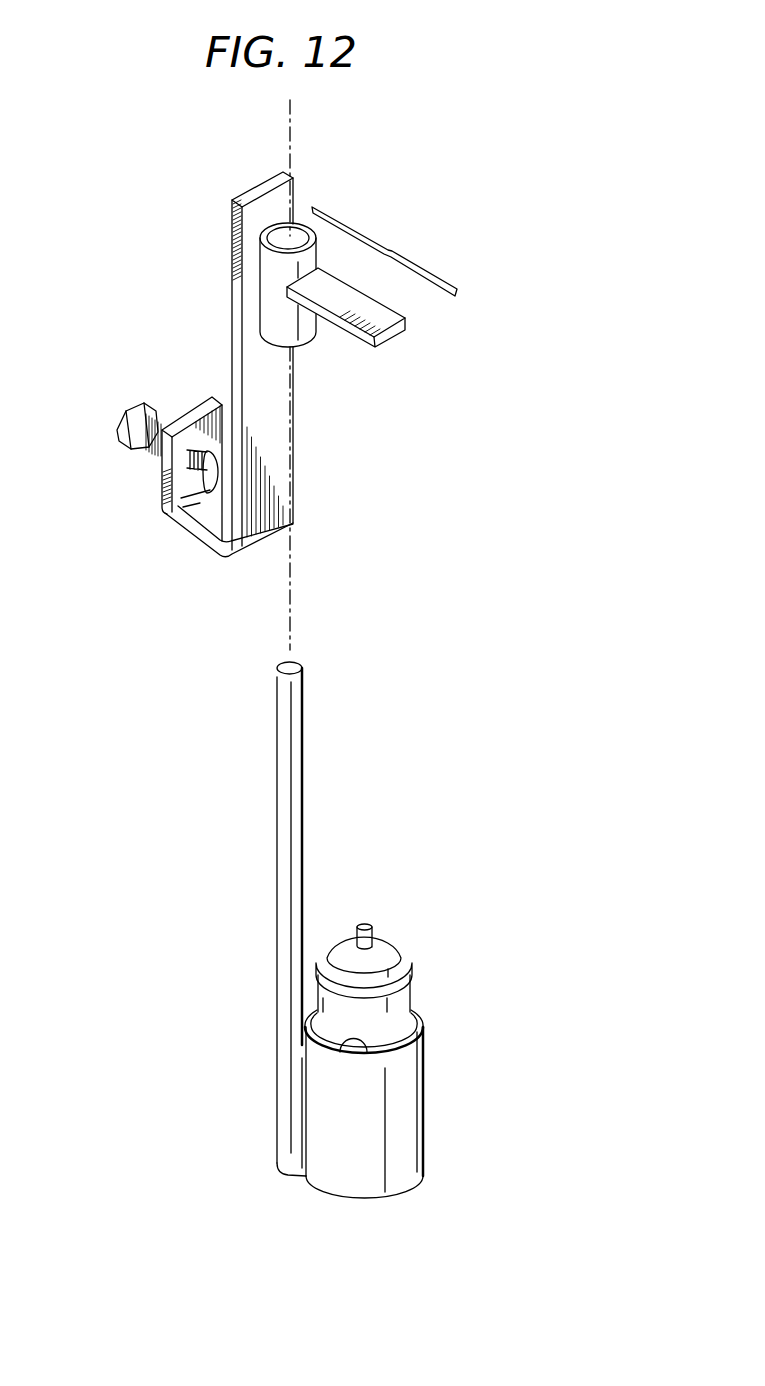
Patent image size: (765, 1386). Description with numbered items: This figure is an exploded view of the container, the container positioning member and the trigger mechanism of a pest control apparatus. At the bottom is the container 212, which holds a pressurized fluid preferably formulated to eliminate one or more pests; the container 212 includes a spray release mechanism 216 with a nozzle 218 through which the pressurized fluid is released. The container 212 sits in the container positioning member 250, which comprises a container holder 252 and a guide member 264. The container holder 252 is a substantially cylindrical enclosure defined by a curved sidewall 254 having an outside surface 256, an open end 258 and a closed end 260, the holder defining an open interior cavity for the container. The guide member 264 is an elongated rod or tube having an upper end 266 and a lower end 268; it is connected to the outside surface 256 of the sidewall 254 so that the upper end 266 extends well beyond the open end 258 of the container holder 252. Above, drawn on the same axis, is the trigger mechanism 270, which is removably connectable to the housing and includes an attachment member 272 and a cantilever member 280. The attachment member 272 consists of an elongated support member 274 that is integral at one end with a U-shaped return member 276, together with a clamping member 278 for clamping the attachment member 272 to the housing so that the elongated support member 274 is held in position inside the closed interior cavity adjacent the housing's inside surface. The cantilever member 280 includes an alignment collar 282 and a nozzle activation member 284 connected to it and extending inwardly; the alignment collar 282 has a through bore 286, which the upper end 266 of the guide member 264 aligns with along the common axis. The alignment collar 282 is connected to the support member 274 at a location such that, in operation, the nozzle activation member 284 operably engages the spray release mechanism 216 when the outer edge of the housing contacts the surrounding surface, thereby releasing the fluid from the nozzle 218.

The container 212 is at (428, 992).
The spray release mechanism 216 is at (383, 945).
The nozzle 218 is at (364, 925).
The container positioning member 250 is at (220, 906).
The container holder 252 is at (437, 1107).
The curved sidewall 254 is at (424, 1079).
The outside surface 256 is at (365, 1173).
The open end 258 is at (355, 1049).
The closed end 260 is at (405, 1193).
The guide member 264 is at (283, 988).
The upper end 266 is at (295, 662).
The lower end 268 is at (289, 1173).
The trigger mechanism 270 is at (126, 356).
The attachment member 272 is at (224, 330).
The elongated support member 274 is at (237, 295).
The U-shaped return member 276 is at (199, 532).
The clamping member 278 is at (126, 447).
The cantilever member 280 is at (384, 251).
The alignment collar 282 is at (306, 337).
The nozzle activation member 284 is at (390, 332).
The through bore 286 is at (285, 233).